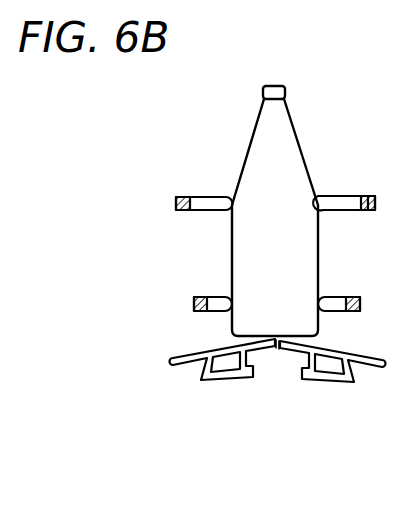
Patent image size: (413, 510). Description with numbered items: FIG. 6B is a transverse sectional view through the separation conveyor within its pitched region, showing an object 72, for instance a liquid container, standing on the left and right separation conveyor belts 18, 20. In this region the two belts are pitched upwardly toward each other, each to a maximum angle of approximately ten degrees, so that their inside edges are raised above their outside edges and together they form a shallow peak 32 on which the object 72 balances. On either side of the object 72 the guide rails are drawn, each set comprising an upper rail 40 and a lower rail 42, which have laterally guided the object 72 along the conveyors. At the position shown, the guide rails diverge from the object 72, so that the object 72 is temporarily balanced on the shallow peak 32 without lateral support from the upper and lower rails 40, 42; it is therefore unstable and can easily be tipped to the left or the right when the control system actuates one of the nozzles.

The object 72 is at (285, 138).
The upper rail 40 is at (216, 197).
The lower rail 42 is at (216, 297).
The right separation conveyor belt 20 is at (185, 353).
The left separation conveyor belt 18 is at (365, 350).
The shallow peak 32 is at (278, 348).